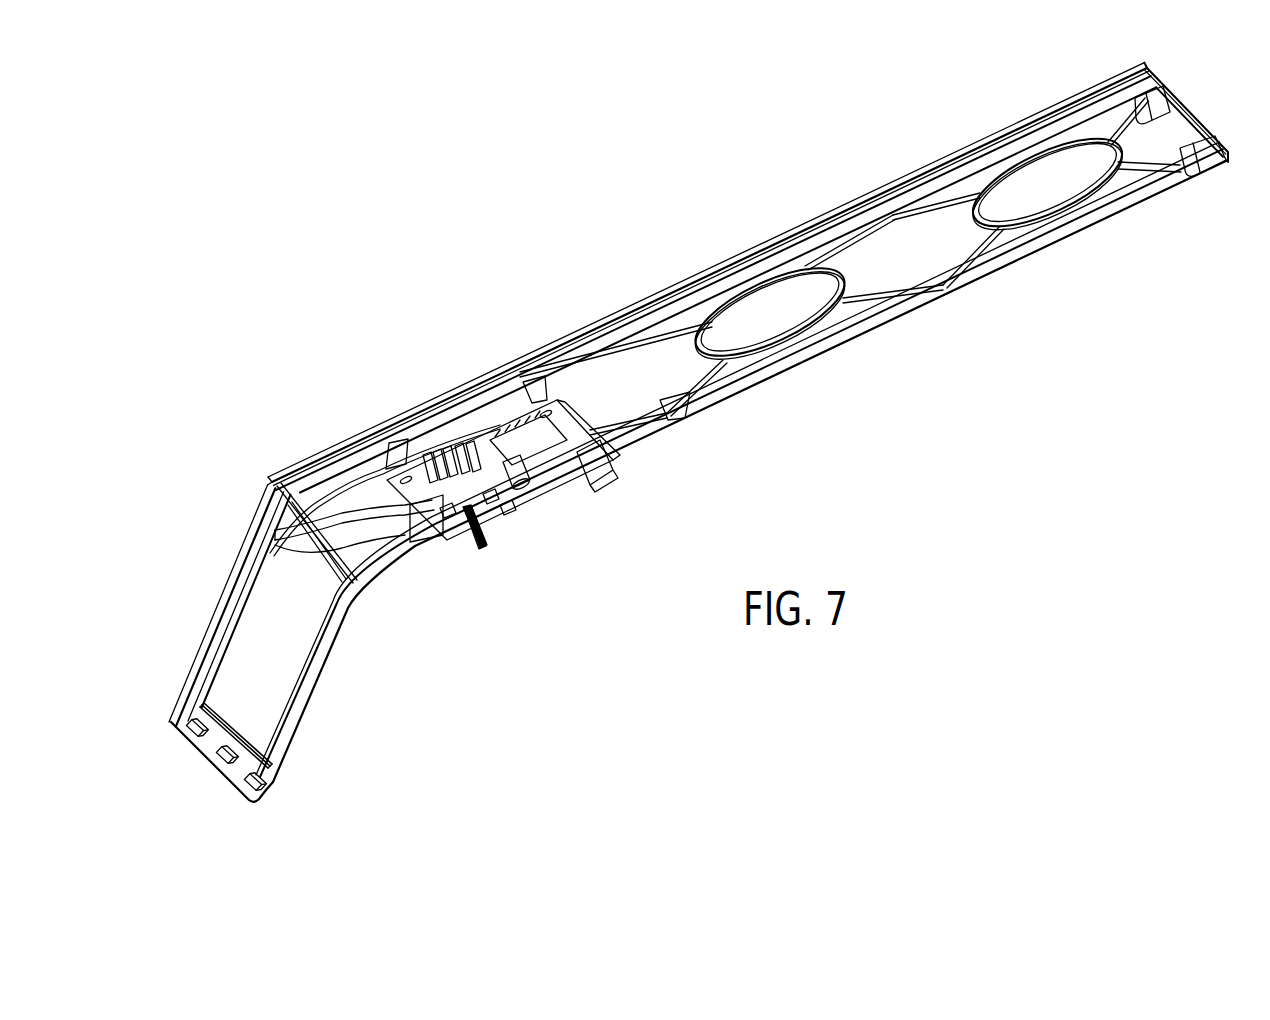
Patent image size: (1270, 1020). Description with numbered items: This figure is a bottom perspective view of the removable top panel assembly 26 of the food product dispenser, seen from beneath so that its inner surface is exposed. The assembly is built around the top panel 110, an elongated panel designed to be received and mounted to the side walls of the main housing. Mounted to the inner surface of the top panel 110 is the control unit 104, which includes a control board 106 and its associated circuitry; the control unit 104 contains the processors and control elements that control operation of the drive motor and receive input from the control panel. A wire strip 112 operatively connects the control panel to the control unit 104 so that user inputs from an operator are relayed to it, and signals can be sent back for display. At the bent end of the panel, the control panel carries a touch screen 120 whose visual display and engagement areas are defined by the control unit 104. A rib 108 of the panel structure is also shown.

The top panel assembly 26 is at (510, 334).
The control unit 104 is at (508, 553).
The control board 106 is at (560, 487).
The support rib 108 is at (598, 366).
The top panel 110 is at (708, 276).
The wire strip 112 is at (354, 526).
The touch screen 120 is at (288, 672).